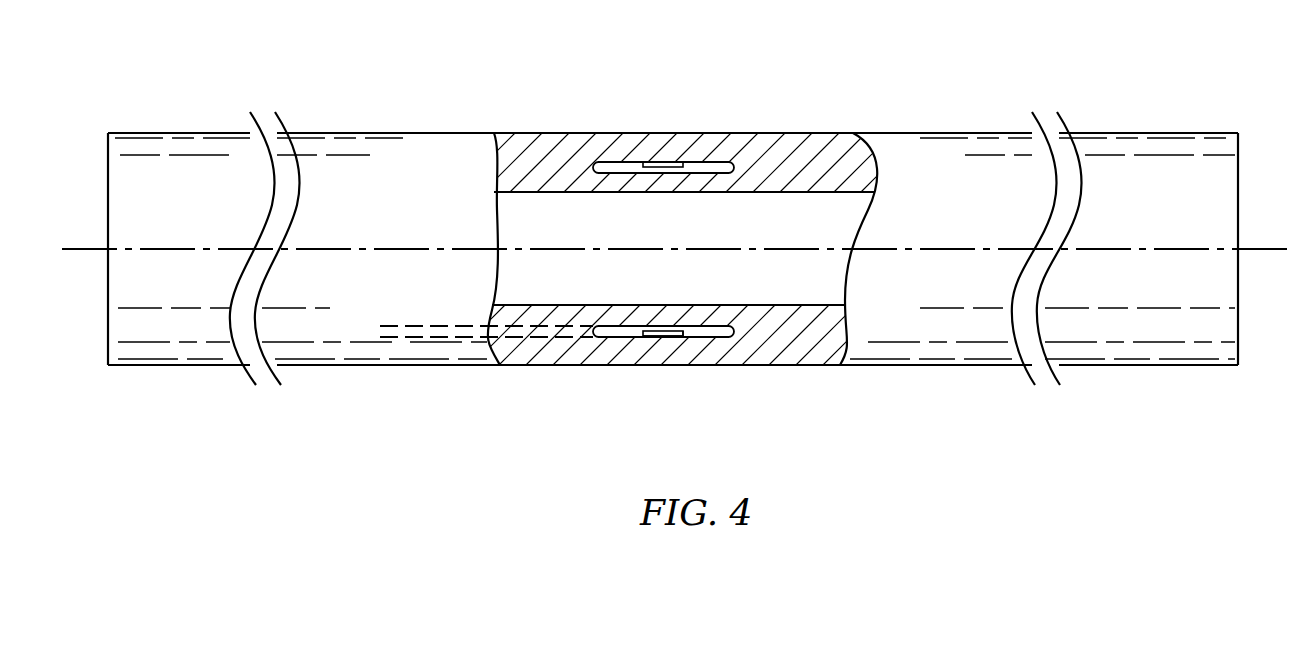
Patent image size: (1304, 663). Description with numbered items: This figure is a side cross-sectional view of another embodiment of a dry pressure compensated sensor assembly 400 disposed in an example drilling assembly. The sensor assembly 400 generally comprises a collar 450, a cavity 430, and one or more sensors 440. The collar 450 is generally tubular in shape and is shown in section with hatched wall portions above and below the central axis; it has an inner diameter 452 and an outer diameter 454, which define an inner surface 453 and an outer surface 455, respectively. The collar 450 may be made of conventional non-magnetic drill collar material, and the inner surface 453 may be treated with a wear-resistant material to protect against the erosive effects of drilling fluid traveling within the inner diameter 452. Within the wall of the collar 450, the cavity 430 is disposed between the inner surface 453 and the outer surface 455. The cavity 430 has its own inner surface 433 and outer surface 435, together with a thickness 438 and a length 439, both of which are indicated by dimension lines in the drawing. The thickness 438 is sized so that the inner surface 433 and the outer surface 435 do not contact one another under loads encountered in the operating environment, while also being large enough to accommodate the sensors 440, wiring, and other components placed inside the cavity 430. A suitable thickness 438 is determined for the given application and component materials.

The dry pressure compensated sensor assembly 400 is at (403, 85).
The cavity 430 is at (697, 160).
The inner surface of cavity 433 is at (680, 331).
The outer surface of cavity 435 is at (683, 337).
The thickness 438 is at (403, 280).
The length 439 is at (593, 340).
The sensors 440 is at (670, 160).
The collar 450 is at (679, 247).
The inner diameter 452 is at (684, 214).
The inner surface 453 is at (800, 192).
The outer diameter 454 is at (673, 112).
The outer surface 455 is at (617, 133).